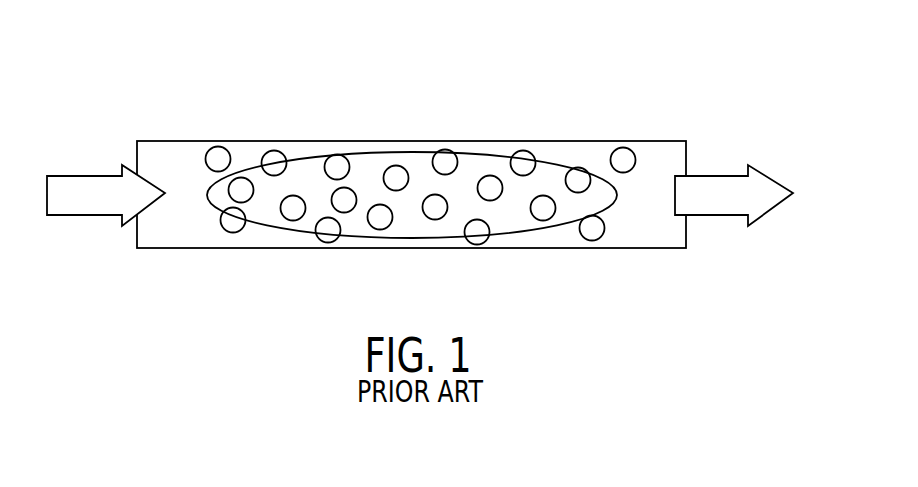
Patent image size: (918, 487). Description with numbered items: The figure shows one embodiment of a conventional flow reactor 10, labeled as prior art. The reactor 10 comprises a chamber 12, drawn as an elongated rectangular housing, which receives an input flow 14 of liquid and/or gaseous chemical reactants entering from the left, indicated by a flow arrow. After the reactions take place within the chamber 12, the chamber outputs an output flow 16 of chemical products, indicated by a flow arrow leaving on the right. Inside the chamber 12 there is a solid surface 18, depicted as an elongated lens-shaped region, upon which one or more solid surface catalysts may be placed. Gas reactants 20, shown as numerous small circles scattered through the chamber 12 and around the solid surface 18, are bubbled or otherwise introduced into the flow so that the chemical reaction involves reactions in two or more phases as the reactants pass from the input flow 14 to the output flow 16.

The conventional flow reactor 10 is at (584, 87).
The chamber 12 is at (193, 248).
The input flow 14 is at (92, 215).
The output flow 16 is at (718, 215).
The solid surface 18 is at (448, 240).
The gas reactants 20 is at (282, 152).